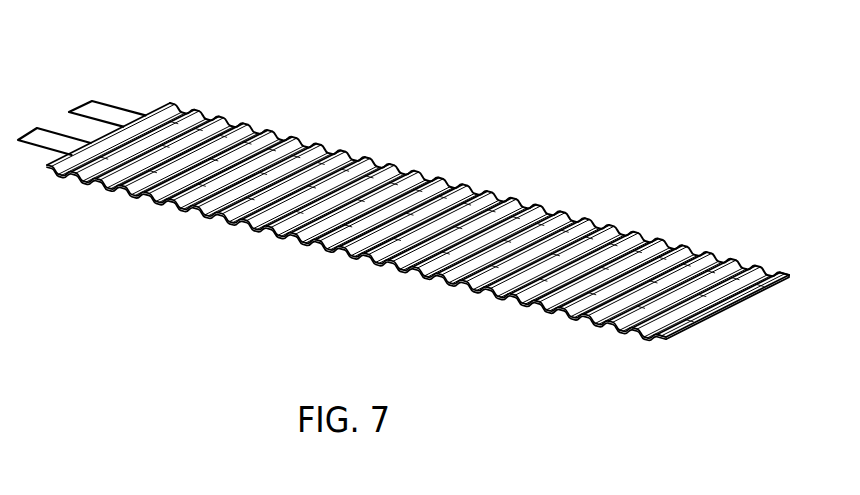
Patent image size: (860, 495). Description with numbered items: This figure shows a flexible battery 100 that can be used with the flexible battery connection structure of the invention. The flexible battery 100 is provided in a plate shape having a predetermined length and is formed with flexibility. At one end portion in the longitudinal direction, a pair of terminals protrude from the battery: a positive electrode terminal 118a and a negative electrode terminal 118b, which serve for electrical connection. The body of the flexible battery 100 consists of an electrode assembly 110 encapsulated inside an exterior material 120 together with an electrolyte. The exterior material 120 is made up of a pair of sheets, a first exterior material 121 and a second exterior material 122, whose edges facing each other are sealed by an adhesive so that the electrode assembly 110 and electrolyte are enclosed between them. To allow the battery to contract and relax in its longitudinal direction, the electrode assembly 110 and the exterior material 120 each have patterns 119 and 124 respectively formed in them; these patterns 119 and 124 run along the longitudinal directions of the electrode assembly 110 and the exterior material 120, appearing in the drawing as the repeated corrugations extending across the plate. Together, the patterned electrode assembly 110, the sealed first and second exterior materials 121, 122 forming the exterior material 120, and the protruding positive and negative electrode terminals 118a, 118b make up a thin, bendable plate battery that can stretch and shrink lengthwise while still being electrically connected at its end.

The flexible battery 100 is at (441, 60).
The electrode assembly 110 is at (598, 222).
The positive electrode terminal 118a is at (104, 110).
The negative electrode terminal 118b is at (40, 133).
The pattern 119 is at (468, 190).
The pattern 124 is at (505, 197).
The exterior material 120 is at (712, 418).
The first exterior material 121 is at (683, 315).
The second exterior material 122 is at (634, 333).